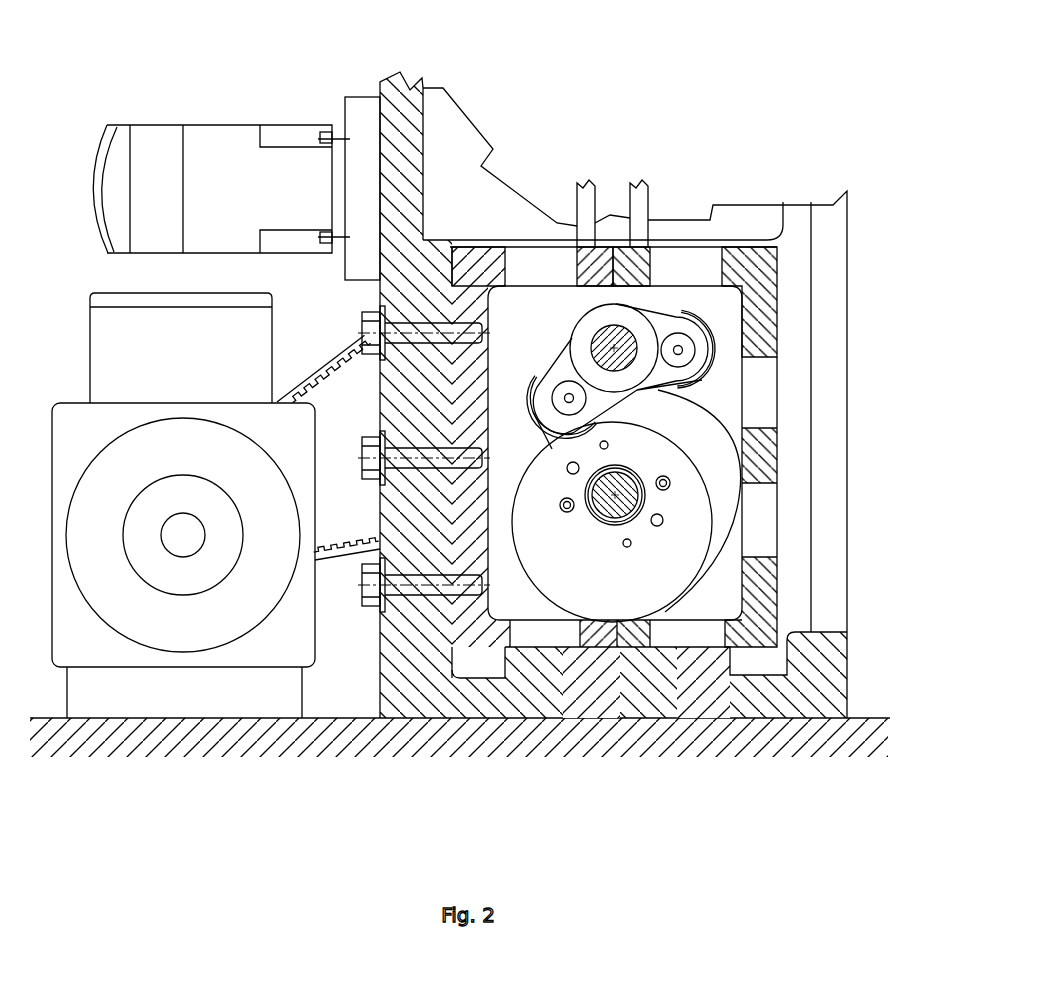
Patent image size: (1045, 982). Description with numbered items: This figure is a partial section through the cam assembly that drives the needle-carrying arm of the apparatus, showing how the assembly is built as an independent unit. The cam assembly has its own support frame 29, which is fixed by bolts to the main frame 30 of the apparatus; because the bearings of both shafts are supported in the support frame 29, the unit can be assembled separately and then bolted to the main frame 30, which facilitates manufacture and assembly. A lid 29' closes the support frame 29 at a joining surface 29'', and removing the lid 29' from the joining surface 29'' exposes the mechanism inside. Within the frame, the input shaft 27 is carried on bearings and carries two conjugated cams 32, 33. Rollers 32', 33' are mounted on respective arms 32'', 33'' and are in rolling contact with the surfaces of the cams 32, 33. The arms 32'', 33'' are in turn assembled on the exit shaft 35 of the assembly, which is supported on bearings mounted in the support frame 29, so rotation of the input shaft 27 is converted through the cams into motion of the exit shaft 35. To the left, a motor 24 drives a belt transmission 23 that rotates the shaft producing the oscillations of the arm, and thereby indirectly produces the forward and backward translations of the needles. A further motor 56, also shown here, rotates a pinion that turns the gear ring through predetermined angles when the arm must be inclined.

The motor 56 is at (225, 165).
The main frame 30 is at (405, 108).
The support frame 29 is at (642, 541).
The lid 29' is at (614, 192).
The joining surface 29'' is at (770, 387).
The belt transmission 23 is at (320, 372).
The motor 24 is at (178, 688).
The exit shaft 35 is at (605, 333).
The conjugated cam 32 is at (722, 501).
The roller 32' is at (700, 376).
The arm 32'' is at (667, 323).
The conjugated cam 33 is at (625, 522).
The roller 33' is at (541, 423).
The arm 33'' is at (574, 372).
The input shaft 27 is at (604, 510).